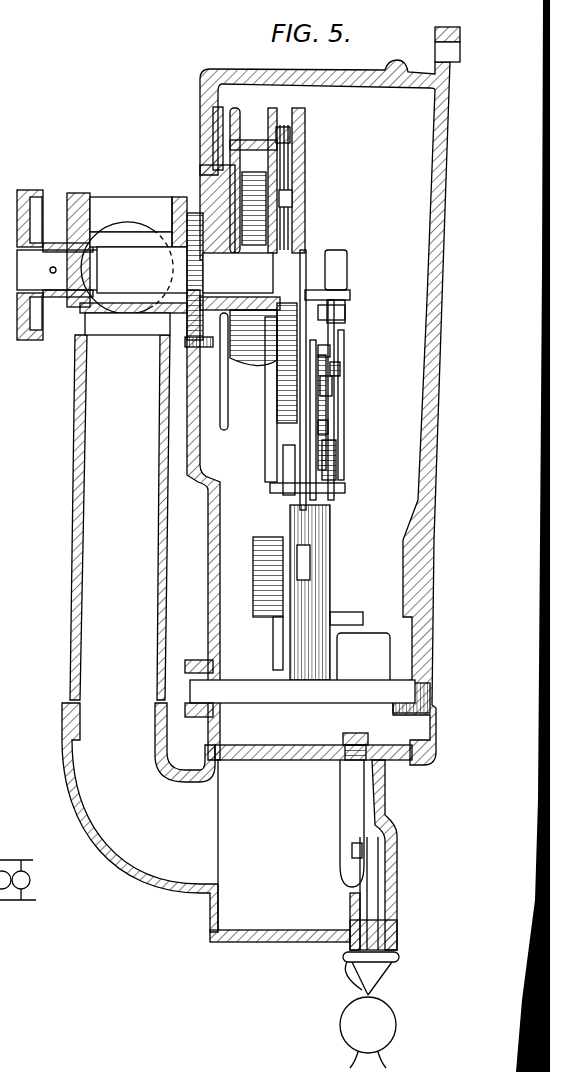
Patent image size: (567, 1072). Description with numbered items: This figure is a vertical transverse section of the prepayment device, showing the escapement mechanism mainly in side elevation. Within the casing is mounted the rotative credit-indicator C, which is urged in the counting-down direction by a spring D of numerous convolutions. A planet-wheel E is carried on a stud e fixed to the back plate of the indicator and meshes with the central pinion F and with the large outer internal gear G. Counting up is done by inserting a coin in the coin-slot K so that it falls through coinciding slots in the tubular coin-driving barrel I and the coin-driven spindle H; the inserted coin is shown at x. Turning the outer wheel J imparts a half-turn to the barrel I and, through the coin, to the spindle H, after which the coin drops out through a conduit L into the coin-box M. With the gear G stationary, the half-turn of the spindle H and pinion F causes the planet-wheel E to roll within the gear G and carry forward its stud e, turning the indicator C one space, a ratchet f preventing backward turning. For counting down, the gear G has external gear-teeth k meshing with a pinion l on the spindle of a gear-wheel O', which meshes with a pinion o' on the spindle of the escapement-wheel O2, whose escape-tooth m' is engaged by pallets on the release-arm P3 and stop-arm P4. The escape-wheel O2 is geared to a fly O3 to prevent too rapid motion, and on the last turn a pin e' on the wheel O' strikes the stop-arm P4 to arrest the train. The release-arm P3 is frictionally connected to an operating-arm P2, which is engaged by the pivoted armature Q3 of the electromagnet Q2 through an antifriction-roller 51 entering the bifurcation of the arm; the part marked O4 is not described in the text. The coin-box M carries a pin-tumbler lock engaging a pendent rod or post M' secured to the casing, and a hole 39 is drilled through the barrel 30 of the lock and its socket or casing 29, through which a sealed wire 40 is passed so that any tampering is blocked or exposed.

The outer wheel J is at (30, 200).
The coin-slot K is at (114, 208).
The inserted coin x is at (124, 246).
The coin-driven spindle H is at (142, 270).
The ratchet f is at (190, 268).
The tubular coin-driving barrel I is at (100, 305).
The conduit L is at (140, 633).
The spring D is at (247, 170).
The credit-indicator C is at (240, 266).
The external gear-teeth k is at (301, 108).
The internal gear G is at (292, 132).
The planet-wheel E is at (293, 160).
The stud e is at (301, 201).
The fly O3 is at (335, 265).
The central pinion F is at (238, 274).
The escapement-wheel O2 is at (318, 336).
The pinion o' is at (342, 354).
The escape-tooth m' is at (350, 373).
The gear-wheel O' is at (344, 391).
The release-arm P3 is at (350, 412).
The pin e' is at (337, 434).
The stop-arm P4 is at (338, 462).
The pinion l is at (283, 455).
The operating-arm P2 is at (295, 522).
The antifriction-roller 51 is at (305, 553).
The electromagnet Q2 is at (265, 575).
The bracket O4 is at (330, 584).
The armature Q3 is at (290, 663).
The pendent rod or post M' is at (338, 810).
The coin-box M is at (280, 851).
The barrel 30 is at (375, 906).
The socket or casing 29 is at (396, 940).
The wire 40 is at (350, 965).
The hole 39 is at (385, 962).